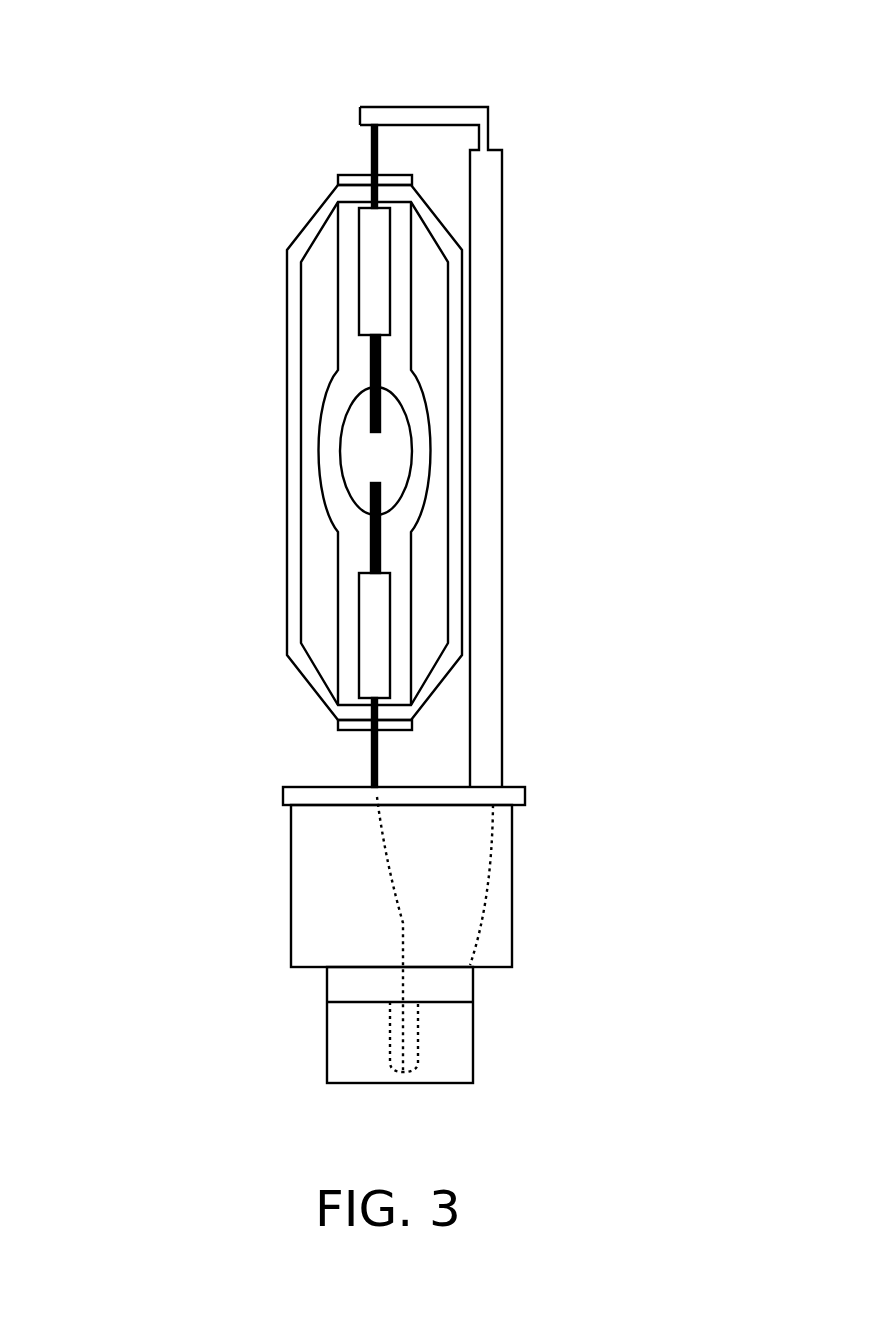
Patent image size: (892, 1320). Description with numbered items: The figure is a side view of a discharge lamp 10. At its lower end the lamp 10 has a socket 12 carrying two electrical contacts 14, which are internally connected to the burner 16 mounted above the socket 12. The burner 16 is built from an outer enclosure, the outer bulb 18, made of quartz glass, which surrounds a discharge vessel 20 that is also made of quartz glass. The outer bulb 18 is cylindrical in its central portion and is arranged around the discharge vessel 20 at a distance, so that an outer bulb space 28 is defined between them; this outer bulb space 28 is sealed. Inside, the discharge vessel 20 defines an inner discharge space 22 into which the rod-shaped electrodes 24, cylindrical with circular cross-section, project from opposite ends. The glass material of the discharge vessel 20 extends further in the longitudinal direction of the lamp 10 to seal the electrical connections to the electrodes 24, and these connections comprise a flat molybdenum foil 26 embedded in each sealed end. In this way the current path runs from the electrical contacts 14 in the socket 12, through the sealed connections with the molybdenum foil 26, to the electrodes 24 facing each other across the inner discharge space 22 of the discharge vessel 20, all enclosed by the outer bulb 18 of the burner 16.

The discharge lamp 10 is at (526, 96).
The socket 12 is at (291, 827).
The electrical contacts 14 is at (490, 970).
The burner 16 is at (292, 200).
The outer bulb 18 is at (287, 272).
The discharge vessel 20 is at (337, 380).
The inner discharge space 22 is at (403, 462).
The electrodes 24 is at (377, 483).
The molybdenum foil 26 is at (372, 320).
The outer bulb space 28 is at (313, 553).